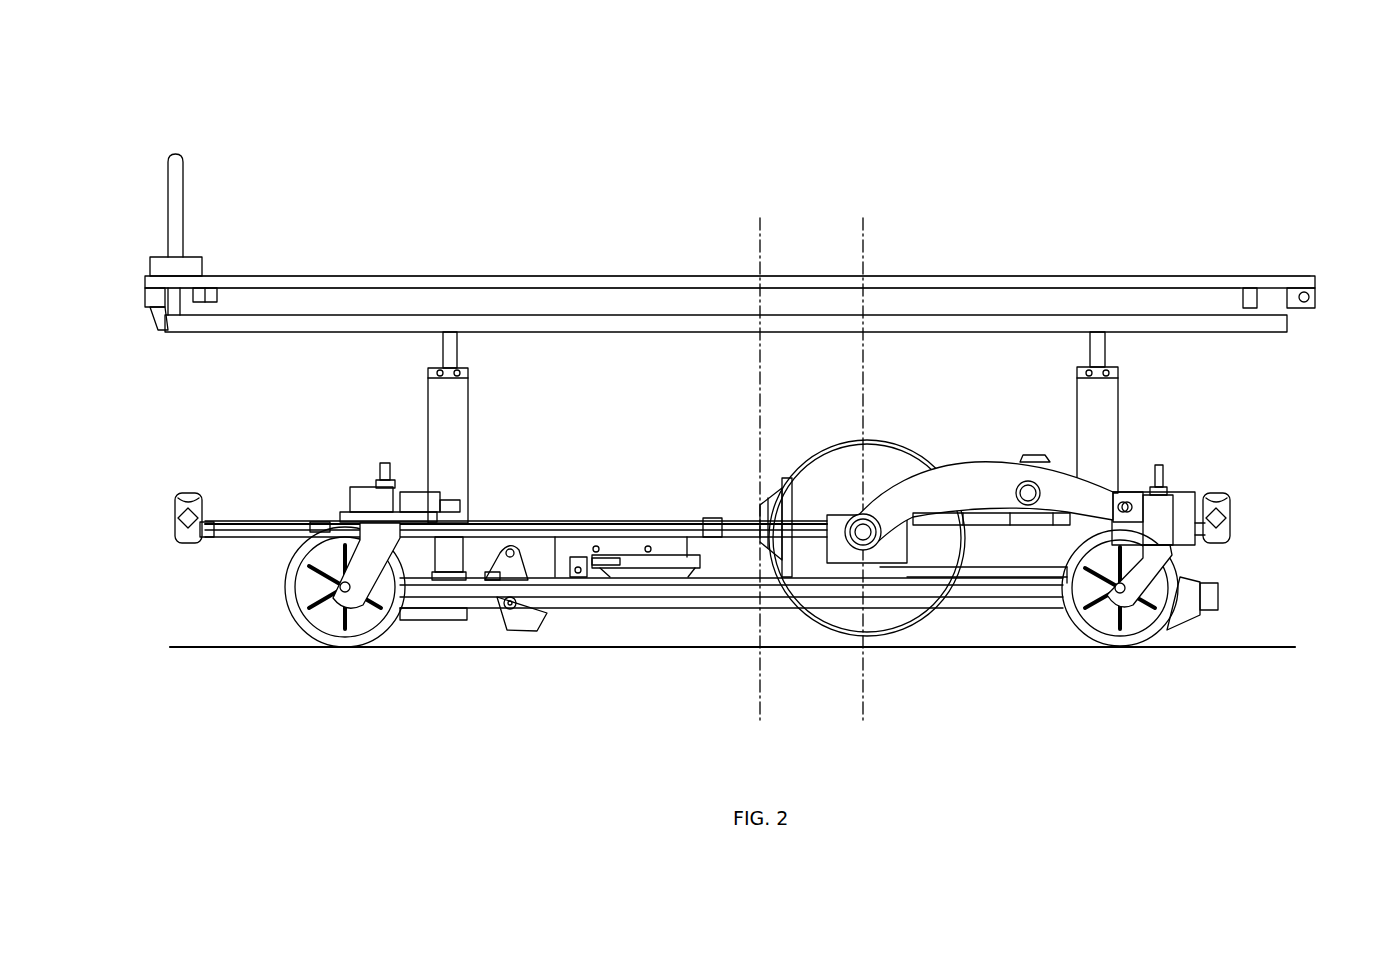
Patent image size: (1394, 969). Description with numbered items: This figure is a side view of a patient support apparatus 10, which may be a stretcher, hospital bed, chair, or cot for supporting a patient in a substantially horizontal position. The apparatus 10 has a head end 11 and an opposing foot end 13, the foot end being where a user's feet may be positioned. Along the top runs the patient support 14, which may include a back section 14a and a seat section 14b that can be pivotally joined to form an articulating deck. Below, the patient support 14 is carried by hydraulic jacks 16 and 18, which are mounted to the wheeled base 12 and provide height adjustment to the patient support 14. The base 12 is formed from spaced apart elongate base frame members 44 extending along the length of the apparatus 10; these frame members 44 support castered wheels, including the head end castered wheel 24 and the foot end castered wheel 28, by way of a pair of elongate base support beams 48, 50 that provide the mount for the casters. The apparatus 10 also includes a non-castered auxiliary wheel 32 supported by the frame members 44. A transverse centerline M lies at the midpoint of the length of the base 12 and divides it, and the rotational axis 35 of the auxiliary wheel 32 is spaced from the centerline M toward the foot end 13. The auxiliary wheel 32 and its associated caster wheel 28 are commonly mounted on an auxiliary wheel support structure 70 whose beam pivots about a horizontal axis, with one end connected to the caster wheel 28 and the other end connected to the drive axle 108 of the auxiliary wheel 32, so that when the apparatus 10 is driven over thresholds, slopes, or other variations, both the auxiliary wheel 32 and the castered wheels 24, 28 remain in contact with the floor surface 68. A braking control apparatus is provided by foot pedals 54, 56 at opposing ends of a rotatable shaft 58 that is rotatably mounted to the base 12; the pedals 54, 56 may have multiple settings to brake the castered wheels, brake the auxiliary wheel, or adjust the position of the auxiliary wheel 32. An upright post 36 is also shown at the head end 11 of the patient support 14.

The patient support apparatus 10 is at (728, 248).
The head end 11 is at (142, 287).
The wheeled base 12 is at (673, 555).
The foot end 13 is at (1320, 278).
The patient support 14 is at (730, 245).
The back section 14a is at (355, 275).
The seat section 14b is at (817, 275).
The hydraulic jack 16 is at (1112, 405).
The hydraulic jack 18 is at (460, 396).
The castered wheel 24 is at (288, 605).
The castered wheel 28 is at (1078, 635).
The auxiliary wheel 32 is at (915, 630).
The rotational axis 35 is at (866, 226).
The transverse centerline M is at (757, 226).
The upright post 36 is at (196, 237).
The elongate base frame member 44 is at (580, 600).
The elongate base support beam 48 is at (1180, 493).
The elongate base support beam 50 is at (362, 490).
The foot pedal 54 is at (1232, 503).
The foot pedal 56 is at (175, 505).
The rotatable shaft 58 is at (552, 520).
The floor surface 68 is at (1252, 645).
The auxiliary wheel support structure 70 is at (988, 460).
The drive axle 108 is at (866, 550).